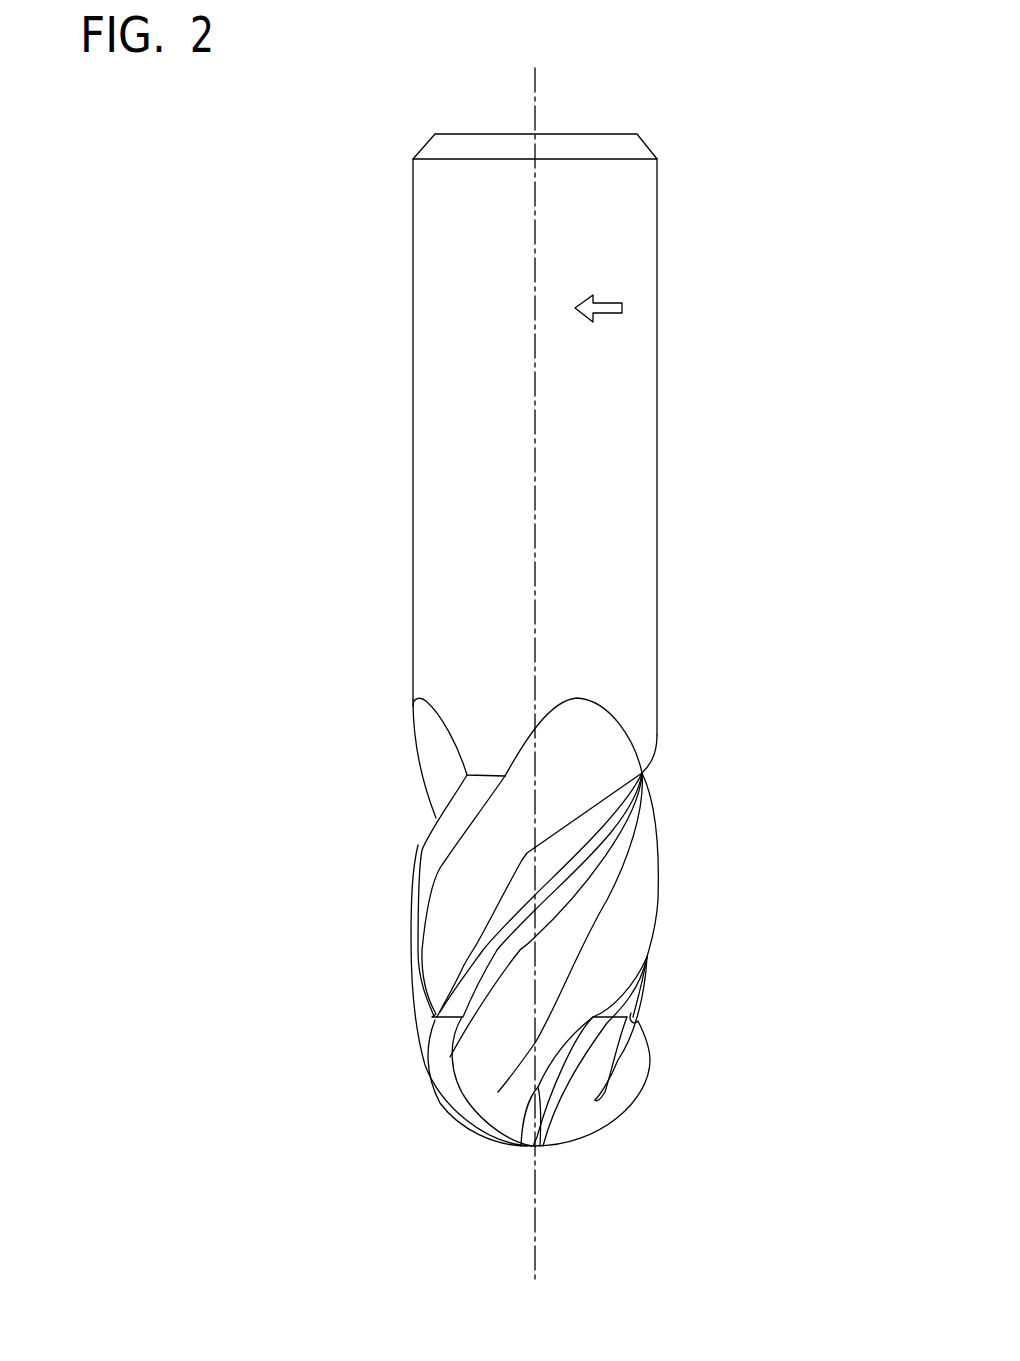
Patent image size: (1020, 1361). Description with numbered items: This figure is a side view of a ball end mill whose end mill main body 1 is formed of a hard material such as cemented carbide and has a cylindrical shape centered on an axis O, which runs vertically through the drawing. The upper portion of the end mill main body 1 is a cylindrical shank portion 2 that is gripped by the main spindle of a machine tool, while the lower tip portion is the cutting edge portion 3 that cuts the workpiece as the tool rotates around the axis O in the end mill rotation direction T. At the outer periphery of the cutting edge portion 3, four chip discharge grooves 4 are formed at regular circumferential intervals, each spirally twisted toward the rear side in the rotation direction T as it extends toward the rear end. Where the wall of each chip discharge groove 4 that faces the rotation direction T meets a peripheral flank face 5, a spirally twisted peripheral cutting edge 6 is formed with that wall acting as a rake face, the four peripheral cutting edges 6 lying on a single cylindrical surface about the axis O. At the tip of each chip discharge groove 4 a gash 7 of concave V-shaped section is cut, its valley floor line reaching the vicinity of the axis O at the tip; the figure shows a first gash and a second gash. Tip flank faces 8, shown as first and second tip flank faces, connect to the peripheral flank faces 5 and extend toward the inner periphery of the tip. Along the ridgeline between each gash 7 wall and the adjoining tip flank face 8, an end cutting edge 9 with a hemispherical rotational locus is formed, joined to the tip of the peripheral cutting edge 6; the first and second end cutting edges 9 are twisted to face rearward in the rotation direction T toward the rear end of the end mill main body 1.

The end mill main body 1 is at (268, 593).
The shank portion 2 is at (390, 560).
The cutting edge portion 3 is at (537, 922).
The chip discharge groove 4 is at (415, 812).
The peripheral flank face 5 is at (420, 843).
The peripheral cutting edge 6 is at (416, 862).
The gash 7 is at (522, 1106).
The tip flank face 8 is at (440, 1104).
The end cutting edge 9 is at (565, 1112).
The axis O is at (535, 1257).
The end mill rotation direction T is at (598, 294).